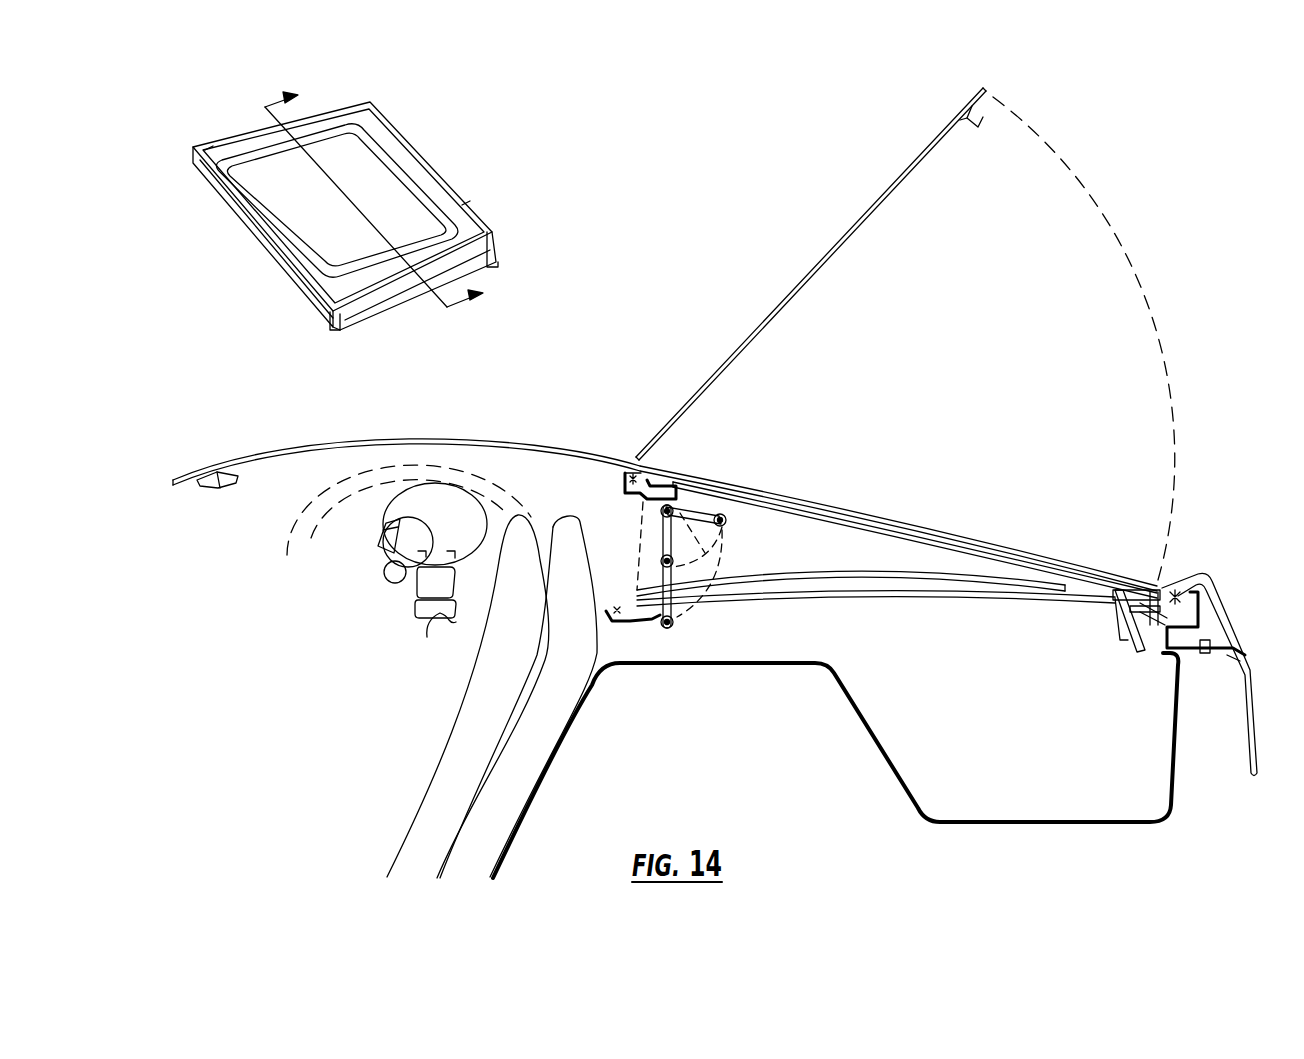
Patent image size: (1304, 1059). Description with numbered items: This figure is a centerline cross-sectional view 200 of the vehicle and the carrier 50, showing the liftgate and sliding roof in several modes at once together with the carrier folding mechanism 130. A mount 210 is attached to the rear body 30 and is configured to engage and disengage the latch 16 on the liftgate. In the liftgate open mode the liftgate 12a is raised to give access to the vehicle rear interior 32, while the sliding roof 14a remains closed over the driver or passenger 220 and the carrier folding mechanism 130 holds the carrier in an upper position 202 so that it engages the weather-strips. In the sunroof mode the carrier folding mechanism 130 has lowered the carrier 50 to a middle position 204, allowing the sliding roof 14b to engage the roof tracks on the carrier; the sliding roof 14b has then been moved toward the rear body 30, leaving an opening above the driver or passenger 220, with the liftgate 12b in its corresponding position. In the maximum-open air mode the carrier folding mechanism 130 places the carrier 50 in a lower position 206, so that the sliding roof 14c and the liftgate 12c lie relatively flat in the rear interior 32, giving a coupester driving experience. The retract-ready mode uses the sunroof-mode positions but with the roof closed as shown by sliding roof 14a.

The cross-sectional view 200 is at (268, 95).
The carrier 50 is at (505, 167).
The liftgate 12a is at (808, 267).
The liftgate 12b is at (807, 513).
The liftgate 12c is at (895, 598).
The sliding roof 14a is at (438, 443).
The sliding roof 14b is at (893, 502).
The sliding roof 14c is at (735, 568).
The latch 16 is at (970, 118).
The rear body 30 is at (1223, 600).
The vehicle rear interior 32 is at (1043, 793).
The carrier folding mechanism 130 is at (672, 628).
The upper position 202 is at (622, 477).
The middle position 204 is at (637, 497).
The lower position 206 is at (660, 621).
The mount 210 is at (1114, 650).
The driver or passenger 220 is at (373, 643).